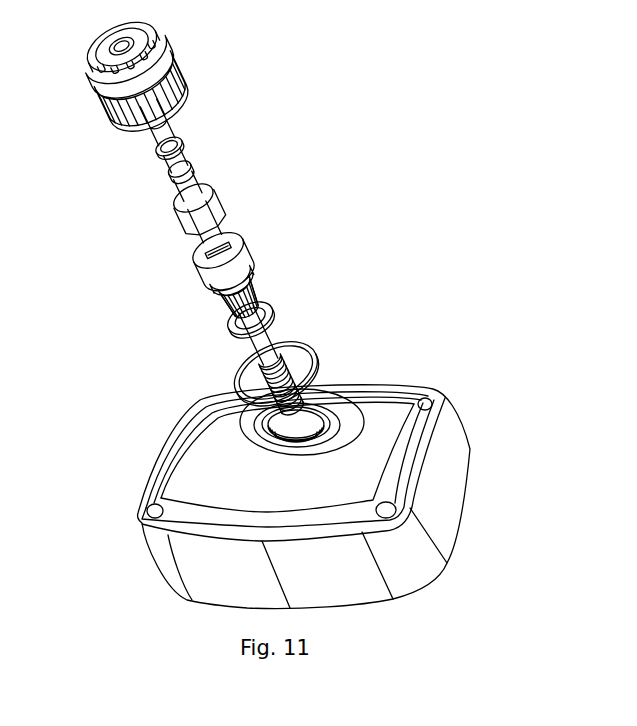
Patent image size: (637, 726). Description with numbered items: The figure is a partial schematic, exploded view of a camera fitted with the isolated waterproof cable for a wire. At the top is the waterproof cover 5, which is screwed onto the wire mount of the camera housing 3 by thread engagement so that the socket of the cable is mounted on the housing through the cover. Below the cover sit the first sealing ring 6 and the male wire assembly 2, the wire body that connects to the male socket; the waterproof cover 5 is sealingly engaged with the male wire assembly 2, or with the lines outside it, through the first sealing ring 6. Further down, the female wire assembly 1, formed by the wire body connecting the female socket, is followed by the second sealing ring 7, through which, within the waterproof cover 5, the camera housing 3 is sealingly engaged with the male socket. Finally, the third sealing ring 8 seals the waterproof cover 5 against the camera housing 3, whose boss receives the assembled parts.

The female wire assembly 1 is at (250, 263).
The male wire assembly 2 is at (188, 192).
The camera housing 3 is at (165, 546).
The waterproof cover 5 is at (170, 63).
The first sealing ring 6 is at (180, 147).
The second sealing ring 7 is at (277, 315).
The third sealing ring 8 is at (317, 362).